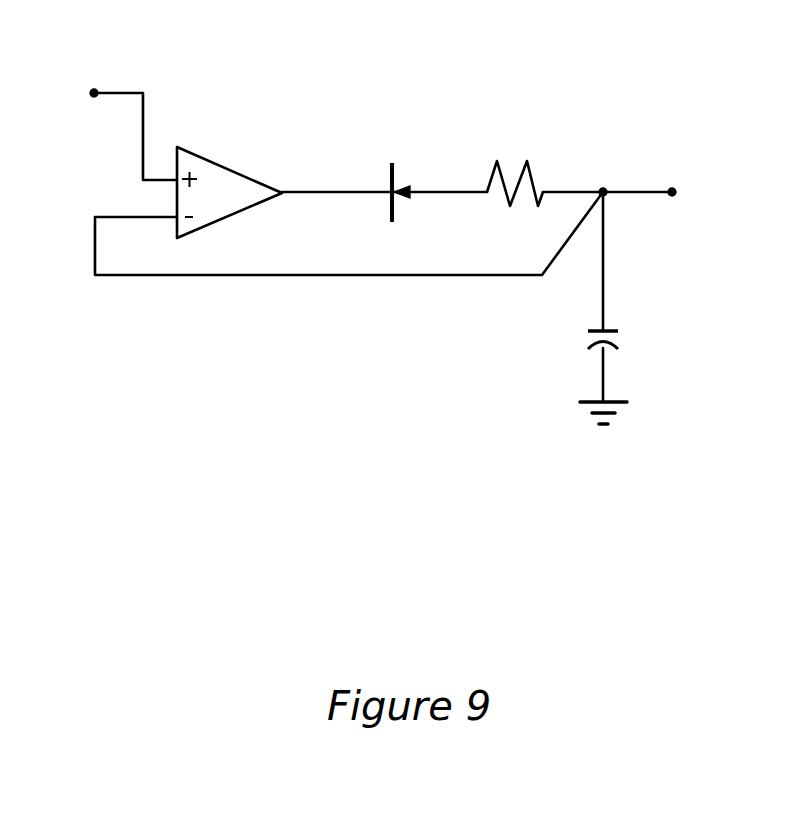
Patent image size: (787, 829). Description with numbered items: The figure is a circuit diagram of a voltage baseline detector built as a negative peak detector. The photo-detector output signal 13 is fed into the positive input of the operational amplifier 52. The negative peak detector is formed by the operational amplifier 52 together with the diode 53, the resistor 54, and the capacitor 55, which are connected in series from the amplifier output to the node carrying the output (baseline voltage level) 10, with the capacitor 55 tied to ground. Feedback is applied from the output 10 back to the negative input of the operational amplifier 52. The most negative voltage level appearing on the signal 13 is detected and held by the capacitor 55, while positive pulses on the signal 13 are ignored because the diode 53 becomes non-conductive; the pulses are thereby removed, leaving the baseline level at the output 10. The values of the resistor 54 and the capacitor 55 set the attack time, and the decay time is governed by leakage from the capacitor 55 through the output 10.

The photo-detector output signal 13 is at (94, 92).
The operational amplifier 52 is at (228, 163).
The diode 53 is at (391, 157).
The resistor 54 is at (527, 158).
The output (baseline voltage level) 10 is at (672, 192).
The capacitor 55 is at (625, 338).